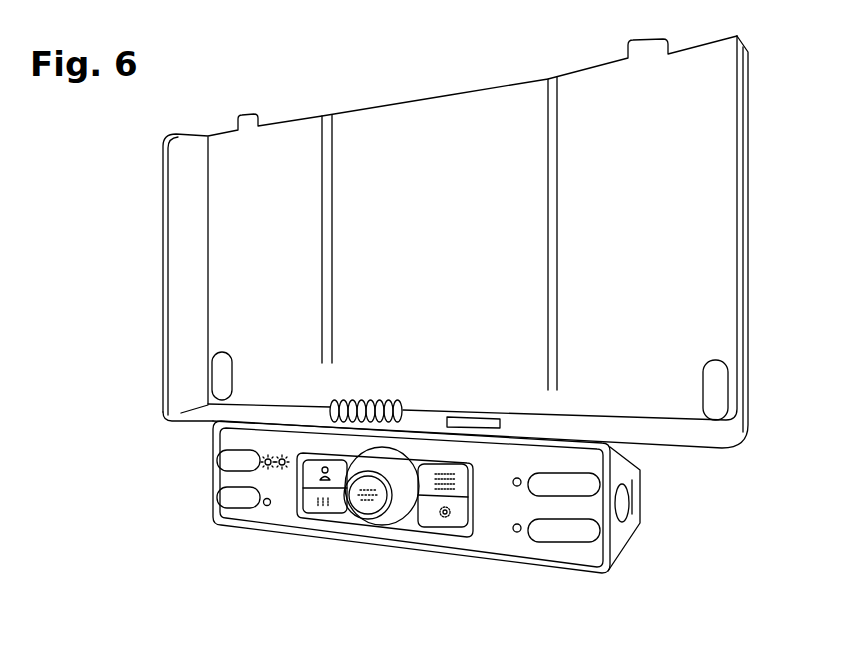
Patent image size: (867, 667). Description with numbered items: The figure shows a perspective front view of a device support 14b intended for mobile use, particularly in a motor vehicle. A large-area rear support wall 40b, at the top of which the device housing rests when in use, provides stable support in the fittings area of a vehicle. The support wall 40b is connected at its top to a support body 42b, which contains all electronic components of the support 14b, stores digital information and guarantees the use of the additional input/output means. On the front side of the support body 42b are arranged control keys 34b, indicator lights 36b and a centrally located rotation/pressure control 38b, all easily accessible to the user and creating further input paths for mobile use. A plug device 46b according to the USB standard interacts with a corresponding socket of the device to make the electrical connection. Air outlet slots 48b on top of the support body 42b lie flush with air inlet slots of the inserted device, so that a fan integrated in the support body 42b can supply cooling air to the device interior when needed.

The device support 14b is at (651, 367).
The control keys 34b is at (297, 500).
The indicator lights 36b is at (267, 506).
The rotation/pressure control 38b is at (372, 508).
The rear support wall 40b is at (405, 130).
The support body 42b is at (287, 520).
The plug device 46b is at (474, 420).
The air outlet slots 48b is at (378, 390).